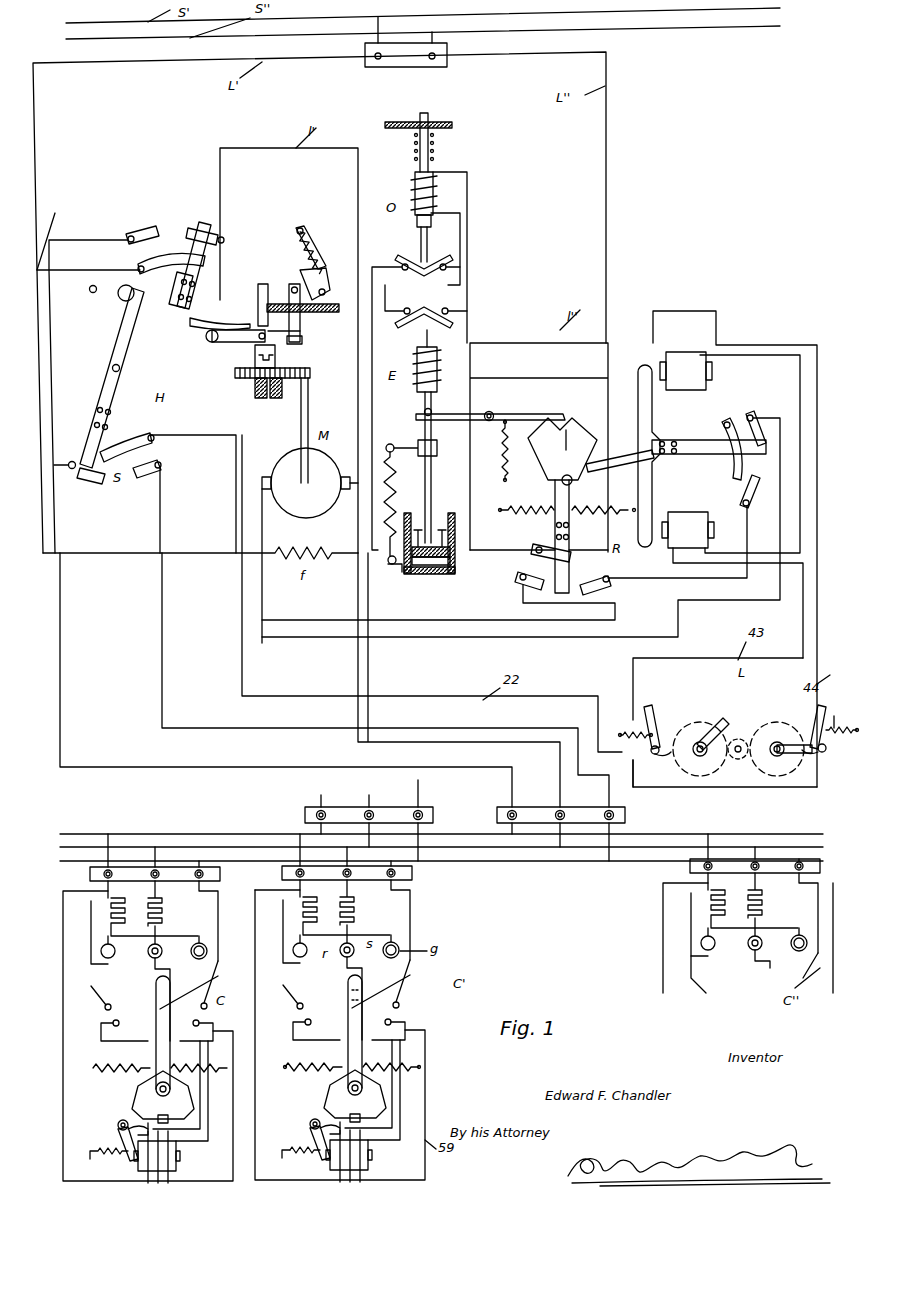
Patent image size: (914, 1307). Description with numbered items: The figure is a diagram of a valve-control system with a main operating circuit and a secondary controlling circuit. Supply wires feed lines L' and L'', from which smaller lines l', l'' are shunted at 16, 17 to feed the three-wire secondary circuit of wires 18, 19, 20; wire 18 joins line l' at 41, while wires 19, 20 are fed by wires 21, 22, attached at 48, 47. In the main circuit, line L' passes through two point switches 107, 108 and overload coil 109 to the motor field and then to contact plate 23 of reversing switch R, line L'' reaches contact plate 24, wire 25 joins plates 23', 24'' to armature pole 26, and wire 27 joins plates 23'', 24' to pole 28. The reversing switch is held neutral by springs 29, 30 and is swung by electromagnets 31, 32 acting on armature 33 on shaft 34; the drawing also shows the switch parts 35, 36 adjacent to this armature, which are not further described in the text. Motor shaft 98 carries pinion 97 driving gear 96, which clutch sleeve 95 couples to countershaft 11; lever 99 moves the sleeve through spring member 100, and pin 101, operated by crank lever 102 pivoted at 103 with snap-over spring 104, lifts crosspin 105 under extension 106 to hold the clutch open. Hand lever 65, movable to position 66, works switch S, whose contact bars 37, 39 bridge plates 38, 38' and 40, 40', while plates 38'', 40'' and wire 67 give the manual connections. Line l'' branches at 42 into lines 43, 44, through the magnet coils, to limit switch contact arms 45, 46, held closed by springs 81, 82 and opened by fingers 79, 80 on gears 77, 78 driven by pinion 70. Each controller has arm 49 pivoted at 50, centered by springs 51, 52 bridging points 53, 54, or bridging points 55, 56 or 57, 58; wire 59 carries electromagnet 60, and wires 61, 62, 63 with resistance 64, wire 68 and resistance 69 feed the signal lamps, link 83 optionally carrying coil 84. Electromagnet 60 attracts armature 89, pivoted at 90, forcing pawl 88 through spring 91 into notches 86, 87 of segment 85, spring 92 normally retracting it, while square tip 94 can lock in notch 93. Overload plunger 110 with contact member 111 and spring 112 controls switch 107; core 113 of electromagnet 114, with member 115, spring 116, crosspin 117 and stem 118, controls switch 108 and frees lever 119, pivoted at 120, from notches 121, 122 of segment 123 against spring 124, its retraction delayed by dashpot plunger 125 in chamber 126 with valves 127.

The countershaft 11 is at (260, 296).
The shunt point 16 is at (88, 378).
The shunt point 17 is at (608, 380).
The wire 18 is at (520, 851).
The wire 19 is at (474, 848).
The wire 20 is at (446, 835).
The wire 21 is at (640, 790).
The wire 22 is at (62, 738).
The contact plate 23 is at (523, 568).
The contact plate 23' is at (438, 596).
The contact plate 23'' is at (595, 616).
The contact plate 24 is at (743, 429).
The contact plate 24' is at (684, 526).
The contact plate 24'' is at (531, 515).
The wire 25 is at (450, 625).
The armature pole 26 is at (345, 476).
The wire 27 is at (502, 645).
The armature pole 28 is at (266, 478).
The spring 29 is at (606, 510).
The spring 30 is at (536, 508).
The electromagnet 31 is at (690, 535).
The electromagnet 32 is at (688, 365).
The armature 33 is at (640, 385).
The shaft 34 is at (612, 462).
The armature 35 is at (556, 518).
The cross bar 36 is at (672, 447).
The contact bar 37 is at (212, 258).
The contact plate 38 is at (171, 256).
The contact plate 38' is at (205, 210).
The contact plate 38'' is at (146, 211).
The contact bar 39 is at (100, 460).
The contact plate 40 is at (168, 477).
The contact plate 40' is at (91, 483).
The contact plate 40'' is at (145, 506).
The connection point 41 is at (567, 851).
The branch point 42 is at (718, 356).
The line 43 is at (772, 345).
The line 44 is at (712, 352).
The contact arm 45 is at (655, 706).
The contact arm 46 is at (815, 710).
The connection point 47 is at (495, 847).
The connection point 48 is at (620, 856).
The controller arm 49 is at (346, 1048).
The pivot 50 is at (365, 1088).
The spring 51 is at (414, 1068).
The spring 52 is at (313, 1075).
The contact point 53 is at (348, 1010).
The contact point 54 is at (349, 992).
The contact point 55 is at (392, 1022).
The contact point 56 is at (400, 1005).
The contact point 57 is at (305, 1022).
The contact point 58 is at (297, 1007).
The wire 59 is at (255, 950).
The electromagnet 60 is at (366, 1160).
The wire 61 is at (410, 935).
The wire 62 is at (283, 920).
The wire 63 is at (366, 935).
The resistance 64 is at (356, 912).
The lever 65 is at (128, 325).
The other position 66 is at (90, 292).
The connecting wire 67 is at (163, 698).
The wire 68 is at (355, 969).
The resistance 69 is at (320, 905).
The pinion 70 is at (738, 760).
The gear 77 is at (700, 721).
The gear 78 is at (770, 721).
The finger 79 is at (725, 722).
The finger 80 is at (793, 751).
The tension spring 81 is at (638, 745).
The tension spring 82 is at (842, 754).
The link 83 is at (412, 976).
The extra coil 84 is at (350, 1176).
The segment 85 is at (348, 1090).
The notch 86 is at (334, 1116).
The notch 87 is at (372, 1116).
The pawl 88 is at (343, 1118).
The armature 89 is at (290, 1151).
The pivot 90 is at (312, 1124).
The spring 91 is at (318, 1141).
The spring 92 is at (302, 1157).
The central notch 93 is at (350, 1128).
The square tip 94 is at (360, 1128).
The clutch sleeve 95 is at (280, 355).
The gear 96 is at (240, 378).
The pinion 97 is at (312, 375).
The motor shaft 98 is at (312, 395).
The lever 99 is at (228, 342).
The spring member 100 is at (210, 322).
The pin 101 is at (302, 316).
The crank lever 102 is at (312, 260).
The pivot 103 is at (322, 272).
The snap over spring 104 is at (297, 252).
The crosspin 105 is at (300, 342).
The extension 106 is at (302, 333).
The two point switch 107 is at (408, 270).
The two point switch 108 is at (416, 312).
The overload coil 109 is at (436, 200).
The plunger 110 is at (434, 222).
The contact member 111 is at (440, 262).
The spring 112 is at (432, 160).
The core 113 is at (418, 388).
The electromagnet 114 is at (440, 378).
The contact member 115 is at (446, 328).
The spring 116 is at (389, 540).
The crosspin 117 is at (434, 413).
The stem 118 is at (436, 404).
The lever 119 is at (532, 414).
The pivot 120 is at (488, 420).
The notch 121 is at (582, 430).
The notch 122 is at (562, 451).
The segment 123 is at (548, 455).
The spring 124 is at (522, 448).
The plunger 125 is at (430, 572).
The chamber 126 is at (405, 572).
The valves 127 is at (446, 572).